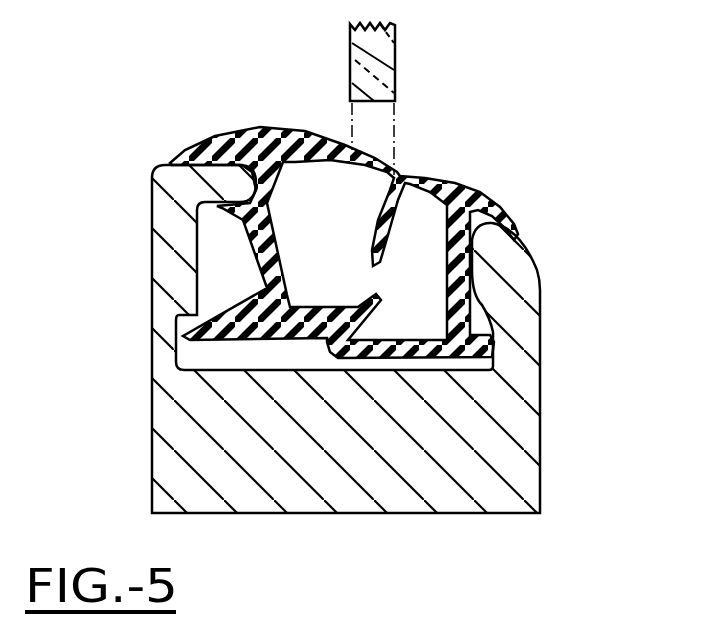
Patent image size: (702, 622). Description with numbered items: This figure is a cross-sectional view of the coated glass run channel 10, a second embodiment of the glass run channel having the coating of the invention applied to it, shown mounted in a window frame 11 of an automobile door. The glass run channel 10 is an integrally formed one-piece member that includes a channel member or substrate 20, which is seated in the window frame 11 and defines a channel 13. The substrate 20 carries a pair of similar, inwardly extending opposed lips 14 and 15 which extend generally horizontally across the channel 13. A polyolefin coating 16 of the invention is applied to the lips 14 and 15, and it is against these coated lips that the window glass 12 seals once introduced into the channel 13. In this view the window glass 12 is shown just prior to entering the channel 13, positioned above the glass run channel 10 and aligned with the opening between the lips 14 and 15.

The glass run channel 10 is at (500, 198).
The window frame 11 is at (530, 342).
The window glass 12 is at (395, 62).
The channel 13 is at (447, 293).
The lip 14 is at (348, 166).
The lip 15 is at (388, 250).
The polyolefin coating 16 is at (332, 132).
The channel member or substrate 20 is at (483, 294).